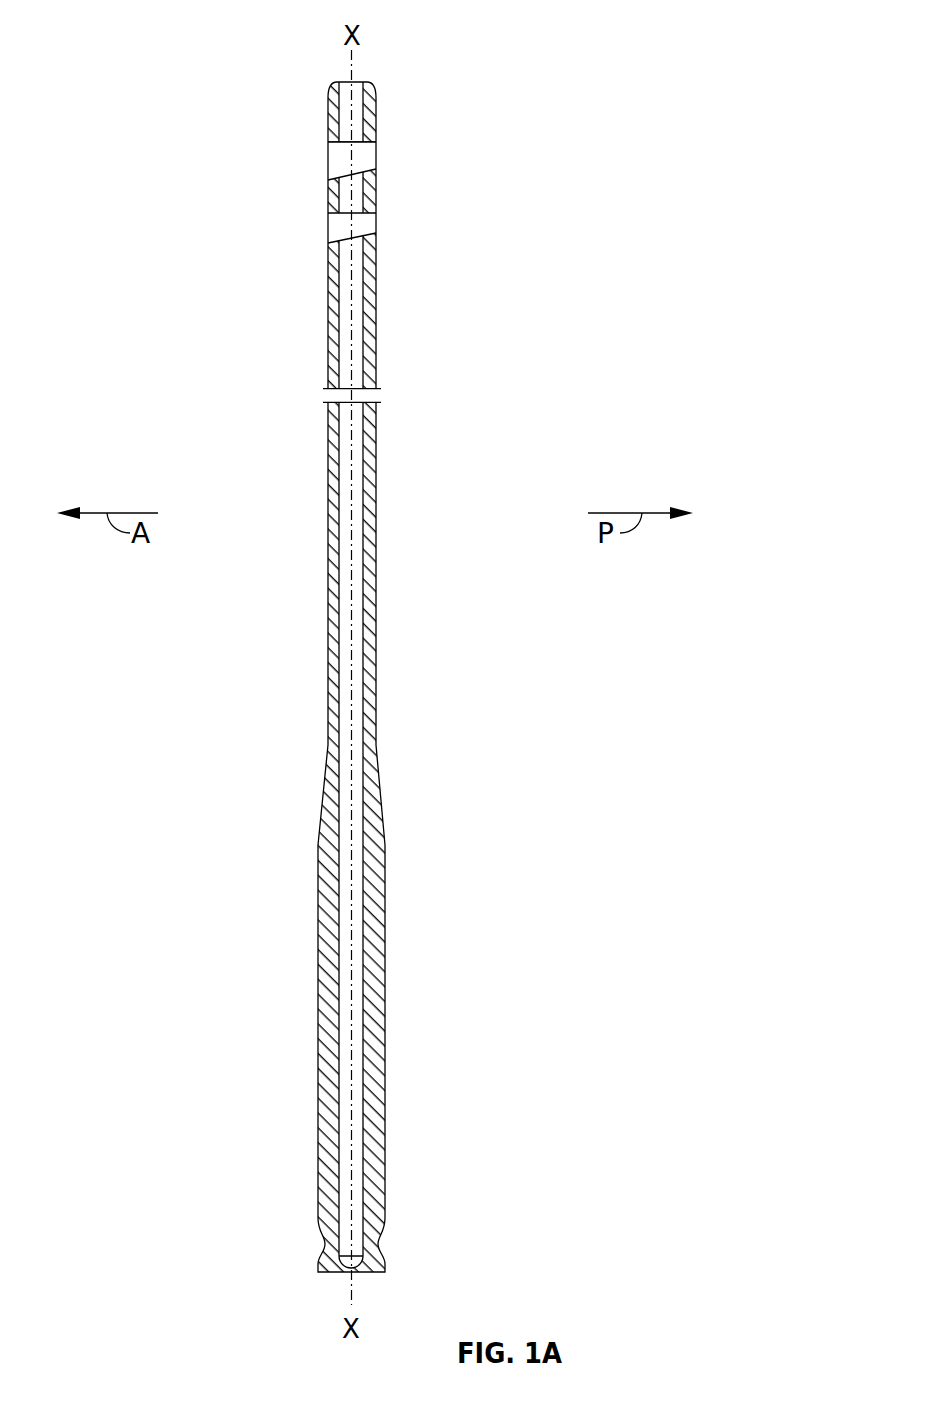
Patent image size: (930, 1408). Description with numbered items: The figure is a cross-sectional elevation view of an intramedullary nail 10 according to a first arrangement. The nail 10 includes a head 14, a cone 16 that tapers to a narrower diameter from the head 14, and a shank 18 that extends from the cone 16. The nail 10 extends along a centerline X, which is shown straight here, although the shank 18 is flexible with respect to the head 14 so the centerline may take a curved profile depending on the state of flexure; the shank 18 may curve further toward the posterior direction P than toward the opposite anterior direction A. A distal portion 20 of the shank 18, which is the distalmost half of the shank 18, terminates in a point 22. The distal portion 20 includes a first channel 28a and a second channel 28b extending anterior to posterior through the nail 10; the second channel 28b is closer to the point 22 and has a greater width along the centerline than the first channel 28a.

The intramedullary nail 10 is at (418, 652).
The head 14 is at (385, 1075).
The cone 16 is at (379, 773).
The shank 18 is at (377, 515).
The distal portion 20 is at (344, 225).
The point 22 is at (337, 80).
The first channel 28a is at (328, 230).
The second channel 28b is at (328, 153).